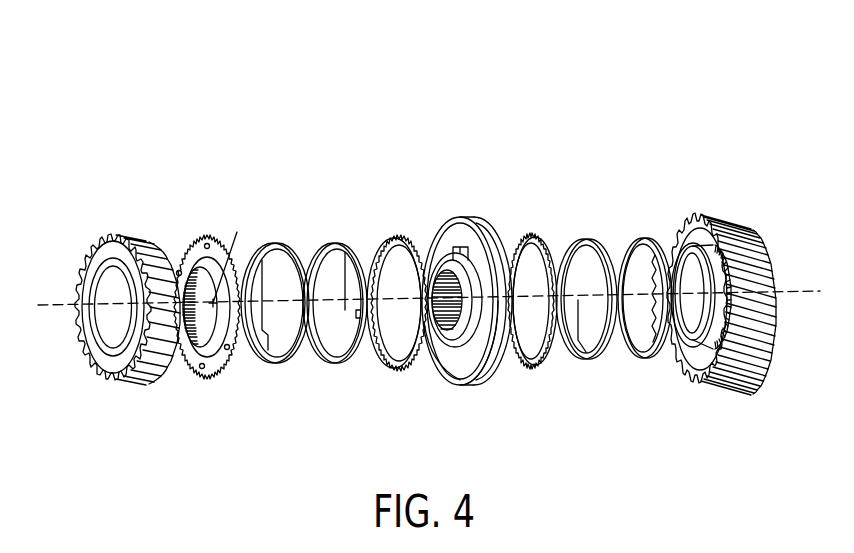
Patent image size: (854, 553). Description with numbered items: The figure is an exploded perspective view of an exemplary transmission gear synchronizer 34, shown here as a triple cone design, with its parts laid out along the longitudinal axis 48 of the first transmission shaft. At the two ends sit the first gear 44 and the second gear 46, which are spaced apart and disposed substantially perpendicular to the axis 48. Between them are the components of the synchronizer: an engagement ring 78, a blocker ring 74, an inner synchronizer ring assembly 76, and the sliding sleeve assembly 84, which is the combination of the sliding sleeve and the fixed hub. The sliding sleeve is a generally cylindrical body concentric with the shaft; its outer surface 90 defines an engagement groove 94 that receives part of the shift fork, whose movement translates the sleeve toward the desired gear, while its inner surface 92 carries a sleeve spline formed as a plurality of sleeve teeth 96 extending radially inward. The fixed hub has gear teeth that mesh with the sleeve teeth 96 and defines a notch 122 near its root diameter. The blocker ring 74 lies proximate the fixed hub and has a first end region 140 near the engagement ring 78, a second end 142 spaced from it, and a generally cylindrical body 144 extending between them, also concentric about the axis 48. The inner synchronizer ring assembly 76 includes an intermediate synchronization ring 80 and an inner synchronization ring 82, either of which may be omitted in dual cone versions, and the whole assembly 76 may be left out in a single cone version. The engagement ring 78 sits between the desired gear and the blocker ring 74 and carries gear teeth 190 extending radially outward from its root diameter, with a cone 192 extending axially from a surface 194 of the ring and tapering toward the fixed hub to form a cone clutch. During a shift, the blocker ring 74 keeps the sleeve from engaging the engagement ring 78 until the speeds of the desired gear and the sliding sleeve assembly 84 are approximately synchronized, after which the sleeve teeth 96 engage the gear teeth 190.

The transmission gear synchronizer 34 is at (243, 92).
The first gear 44 is at (118, 228).
The second gear 46 is at (715, 205).
The longitudinal axis 48 is at (52, 303).
The blocker ring 74 is at (377, 370).
The inner synchronizer ring assembly 76 is at (370, 242).
The engagement ring 78 is at (198, 222).
The intermediate synchronization ring 80 is at (320, 370).
The inner synchronization ring 82 is at (262, 370).
The sliding sleeve assembly 84 is at (465, 395).
The outer surface 90 is at (480, 240).
The inner surface 92 is at (442, 367).
The engagement groove 94 is at (493, 362).
The sleeve teeth 96 is at (430, 358).
The notch 122 is at (458, 250).
The first end region 140 is at (398, 225).
The second end 142 is at (388, 262).
The generally cylindrical body 144 is at (386, 250).
The gear teeth 190 is at (196, 383).
The cone 192 is at (712, 340).
The surface 194 is at (692, 352).